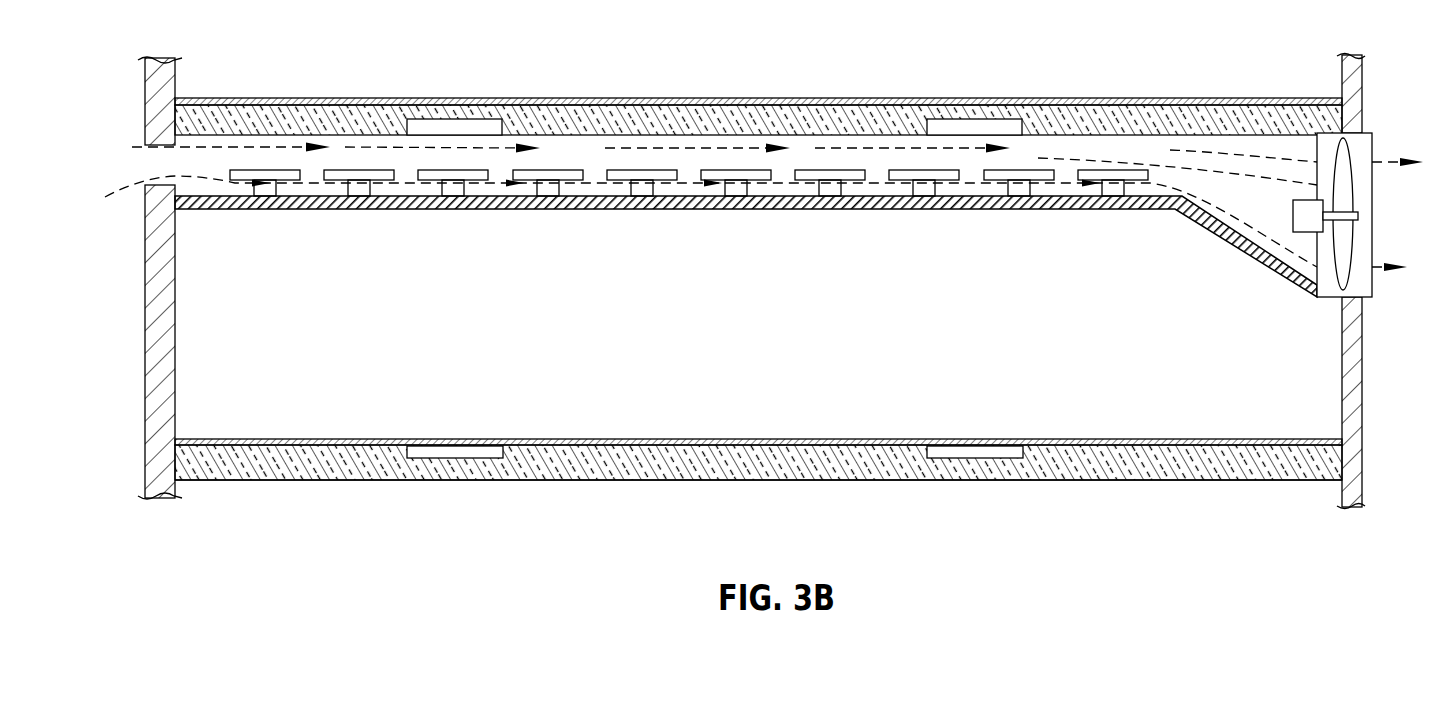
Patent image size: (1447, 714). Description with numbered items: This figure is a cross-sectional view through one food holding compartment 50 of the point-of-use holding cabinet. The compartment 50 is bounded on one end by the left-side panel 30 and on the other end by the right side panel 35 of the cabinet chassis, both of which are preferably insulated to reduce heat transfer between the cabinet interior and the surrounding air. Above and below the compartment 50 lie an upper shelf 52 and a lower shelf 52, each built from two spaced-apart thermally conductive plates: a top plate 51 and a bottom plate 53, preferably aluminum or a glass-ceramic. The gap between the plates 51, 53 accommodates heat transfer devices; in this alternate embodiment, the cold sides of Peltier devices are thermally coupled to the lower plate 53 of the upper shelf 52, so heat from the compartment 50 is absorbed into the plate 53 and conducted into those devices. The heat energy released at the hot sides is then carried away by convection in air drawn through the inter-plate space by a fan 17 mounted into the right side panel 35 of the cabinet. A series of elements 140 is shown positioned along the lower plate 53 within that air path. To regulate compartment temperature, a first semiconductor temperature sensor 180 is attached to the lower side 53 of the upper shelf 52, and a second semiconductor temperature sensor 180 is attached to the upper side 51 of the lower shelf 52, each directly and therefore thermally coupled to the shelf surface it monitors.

The fan 17 is at (1367, 282).
The left-side panel 30 is at (145, 457).
The right side panel 35 is at (1362, 462).
The food holding compartment 50 is at (810, 328).
The top plate 51 is at (555, 98).
The shelf 52 is at (638, 115).
The bottom plate 53 is at (612, 209).
The heating elements 140 is at (258, 172).
The semiconductor temperature sensor 180 is at (427, 127).